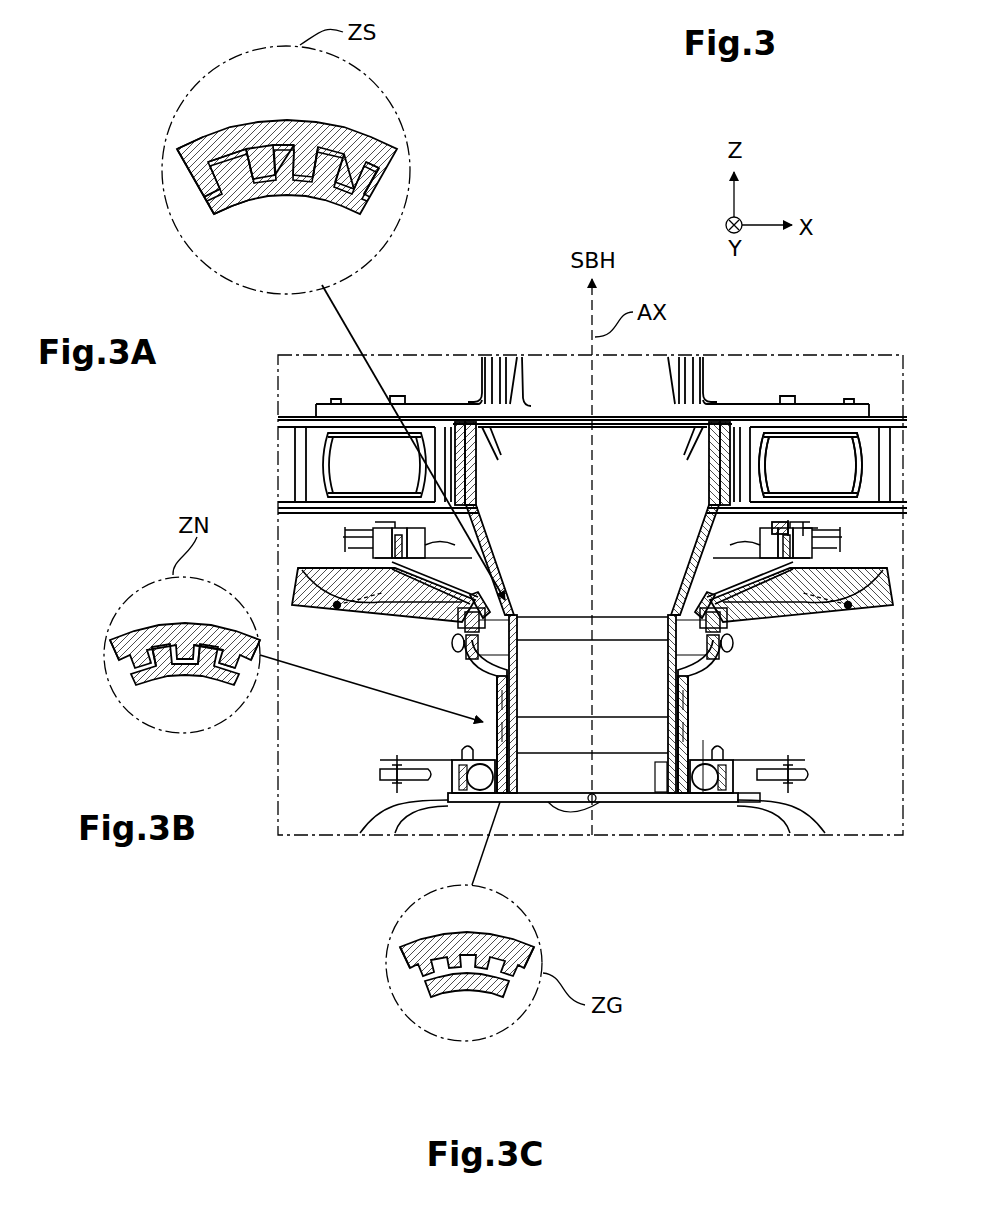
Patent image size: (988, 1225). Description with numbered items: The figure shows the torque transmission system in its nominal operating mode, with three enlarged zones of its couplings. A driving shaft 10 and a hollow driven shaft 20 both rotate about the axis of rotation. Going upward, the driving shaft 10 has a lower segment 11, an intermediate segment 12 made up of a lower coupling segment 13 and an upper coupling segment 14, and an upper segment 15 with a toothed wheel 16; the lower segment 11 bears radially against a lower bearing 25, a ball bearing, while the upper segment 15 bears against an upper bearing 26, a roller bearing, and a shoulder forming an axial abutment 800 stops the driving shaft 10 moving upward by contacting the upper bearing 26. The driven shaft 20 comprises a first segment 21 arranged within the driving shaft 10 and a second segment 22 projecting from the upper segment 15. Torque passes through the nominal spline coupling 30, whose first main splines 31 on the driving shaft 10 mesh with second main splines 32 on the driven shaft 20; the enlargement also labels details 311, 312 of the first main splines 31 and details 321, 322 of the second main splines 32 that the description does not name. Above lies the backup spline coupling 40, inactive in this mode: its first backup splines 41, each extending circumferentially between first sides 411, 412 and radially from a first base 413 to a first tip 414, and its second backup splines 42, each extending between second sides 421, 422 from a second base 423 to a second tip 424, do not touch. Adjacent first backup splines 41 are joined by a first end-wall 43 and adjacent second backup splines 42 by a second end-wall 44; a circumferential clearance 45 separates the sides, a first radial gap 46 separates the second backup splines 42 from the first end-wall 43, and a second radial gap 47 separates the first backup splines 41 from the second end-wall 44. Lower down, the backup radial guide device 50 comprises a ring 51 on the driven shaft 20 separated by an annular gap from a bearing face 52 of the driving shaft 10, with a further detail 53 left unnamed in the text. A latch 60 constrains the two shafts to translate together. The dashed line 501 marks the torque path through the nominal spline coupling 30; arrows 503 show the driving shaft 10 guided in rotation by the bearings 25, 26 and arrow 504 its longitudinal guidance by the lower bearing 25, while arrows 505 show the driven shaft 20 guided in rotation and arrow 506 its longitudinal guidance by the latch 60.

In FIG. 3, the driving shaft 10 is at (905, 574).
In FIG. 3, the lower segment 11 is at (705, 802).
In FIG. 3, the intermediate segment 12 is at (730, 685).
In FIG. 3, the lower coupling segment 13 is at (700, 673).
In FIG. 3, the upper coupling segment 14 is at (752, 592).
In FIG. 3, the upper segment 15 is at (698, 545).
In FIG. 3, the toothed wheel 16 is at (878, 603).
In FIG. 3, the driven shaft 20 is at (577, 542).
In FIG. 3, the first segment 21 is at (530, 783).
In FIG. 3, the second segment 22 is at (500, 530).
In FIG. 3, the lower bearing 25 is at (740, 805).
In FIG. 3, the upper bearing 26 is at (800, 525).
In FIG. 3, the nominal spline coupling 30 is at (540, 735).
In FIG. 3B, the nominal spline coupling 30 is at (113, 670).
In FIG. 3B, the first main splines 31 is at (133, 640).
In FIG. 3B, the second main splines 32 is at (140, 640).
In FIG. 3, the backup spline coupling 40 is at (490, 592).
In FIG. 3A, the backup spline coupling 40 is at (106, 205).
In FIG. 3A, the first backup splines 41 is at (353, 165).
In FIG. 3A, the second backup splines 42 is at (282, 190).
In FIG. 3A, the first end-wall 43 is at (222, 130).
In FIG. 3A, the second end-wall 44 is at (247, 197).
In FIG. 3A, the circumferential clearance 45 is at (190, 175).
In FIG. 3A, the first radial gap 46 is at (215, 147).
In FIG. 3A, the second radial gap 47 is at (200, 205).
In FIG. 3, the backup radial guide device 50 is at (526, 805).
In FIG. 3C, the backup radial guide device 50 is at (471, 1048).
In FIG. 3C, the ring 51 is at (447, 960).
In FIG. 3C, the bearing face 52 is at (420, 960).
In FIG. 3C, the gear tooth 53 is at (437, 963).
In FIG. 3, the latch 60 is at (655, 775).
In FIG. 3B, the tooth 311 is at (200, 643).
In FIG. 3B, the tooth flank 312 is at (210, 670).
In FIG. 3B, the tooth 321 is at (173, 680).
In FIG. 3B, the tooth flank 322 is at (183, 667).
In FIG. 3A, the first side 411 is at (327, 150).
In FIG. 3A, the first side 412 is at (397, 183).
In FIG. 3A, the first base 413 is at (367, 153).
In FIG. 3A, the first tip 414 is at (383, 200).
In FIG. 3A, the second side 421 is at (267, 180).
In FIG. 3A, the second side 422 is at (313, 163).
In FIG. 3A, the second base 423 is at (285, 200).
In FIG. 3A, the second tip 424 is at (268, 135).
In FIG. 3, the dashed line 501 is at (492, 400).
In FIG. 3, the arrows 503 is at (810, 545).
In FIG. 3, the arrow 504 is at (735, 740).
In FIG. 3, the arrows 505 is at (785, 522).
In FIG. 3, the arrow 506 is at (665, 802).
In FIG. 3, the axial abutment 800 is at (403, 568).